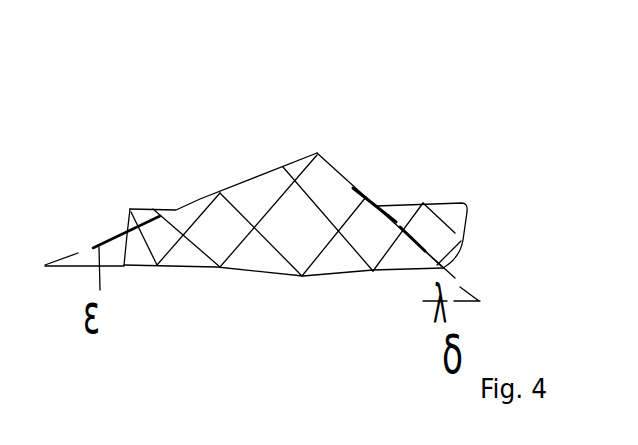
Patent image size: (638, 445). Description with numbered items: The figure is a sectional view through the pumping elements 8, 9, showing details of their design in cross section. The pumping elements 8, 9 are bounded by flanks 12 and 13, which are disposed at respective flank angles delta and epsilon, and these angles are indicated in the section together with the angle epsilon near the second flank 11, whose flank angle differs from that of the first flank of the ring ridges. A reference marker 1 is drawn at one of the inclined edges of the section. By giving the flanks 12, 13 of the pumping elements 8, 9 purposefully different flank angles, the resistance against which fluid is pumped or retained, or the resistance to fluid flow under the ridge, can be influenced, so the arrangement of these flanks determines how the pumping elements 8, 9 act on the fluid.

The slat 1 is at (412, 256).
The pumping element 8 is at (312, 212).
The pumping element 9 is at (312, 212).
The second flank 11 is at (102, 247).
The flank 12 is at (352, 174).
The flank 13 is at (271, 170).